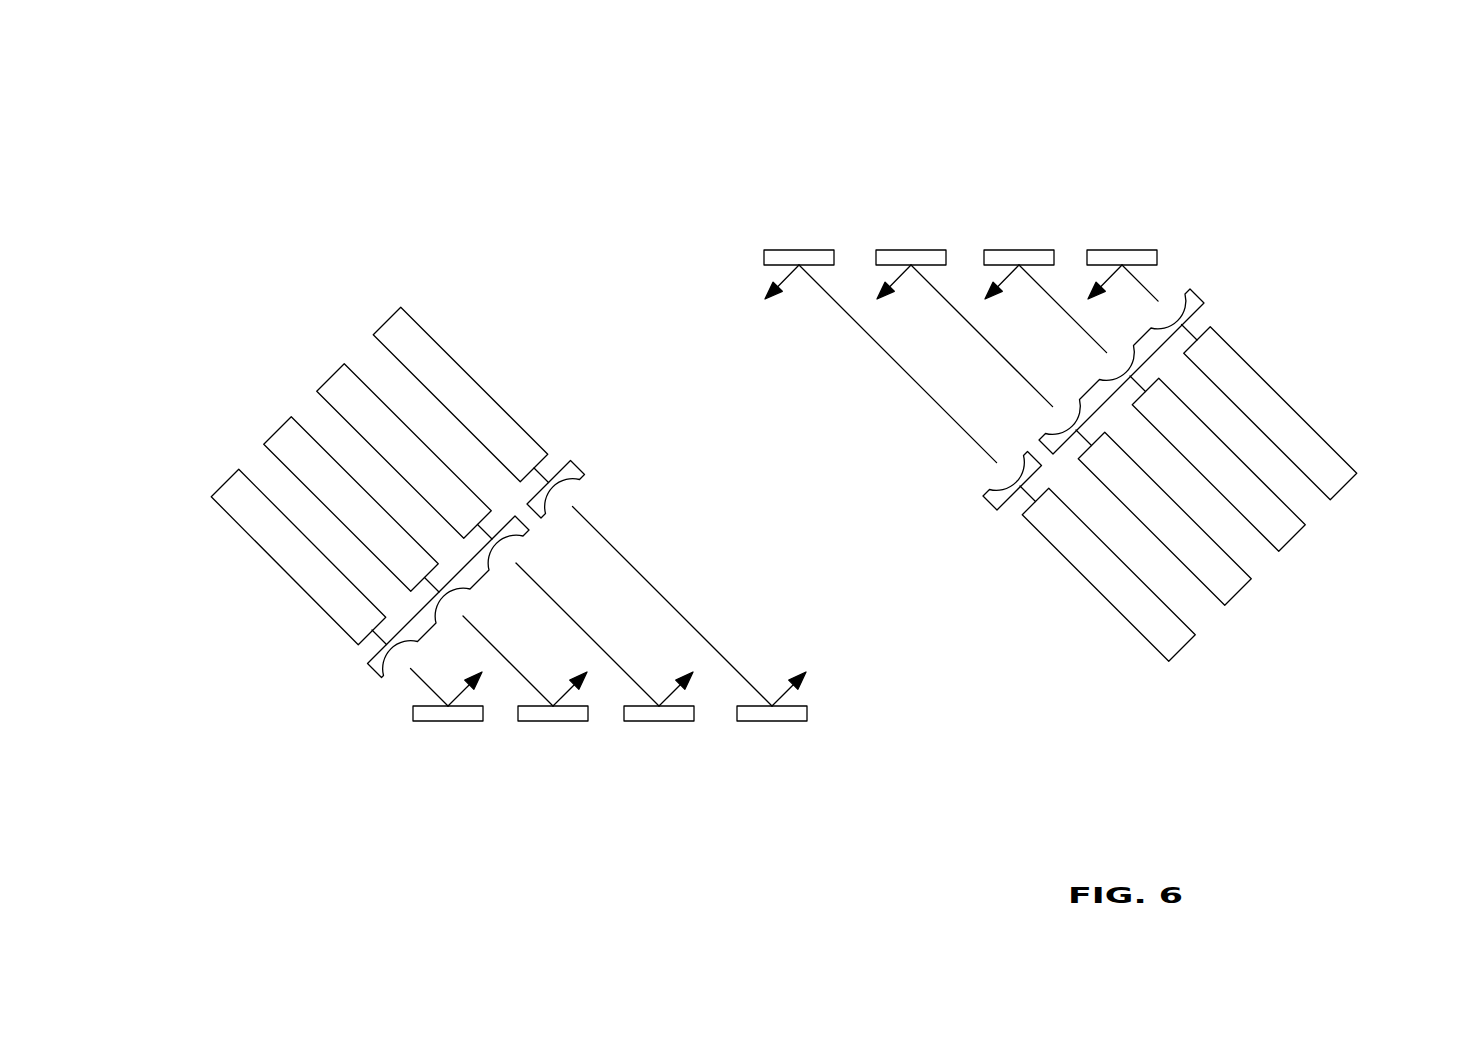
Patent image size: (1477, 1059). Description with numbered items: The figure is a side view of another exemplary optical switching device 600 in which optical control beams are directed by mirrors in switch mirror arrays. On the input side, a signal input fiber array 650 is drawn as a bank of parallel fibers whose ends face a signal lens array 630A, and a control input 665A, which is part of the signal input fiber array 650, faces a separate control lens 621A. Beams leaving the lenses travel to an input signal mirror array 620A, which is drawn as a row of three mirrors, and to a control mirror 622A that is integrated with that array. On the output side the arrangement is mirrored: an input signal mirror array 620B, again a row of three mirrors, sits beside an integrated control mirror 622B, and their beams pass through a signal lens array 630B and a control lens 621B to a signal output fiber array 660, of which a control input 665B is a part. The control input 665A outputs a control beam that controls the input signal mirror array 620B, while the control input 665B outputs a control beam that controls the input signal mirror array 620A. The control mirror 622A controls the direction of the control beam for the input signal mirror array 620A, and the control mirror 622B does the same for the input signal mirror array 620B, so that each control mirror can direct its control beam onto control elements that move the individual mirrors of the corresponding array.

The optical switching device 600 is at (1236, 136).
The input signal mirror array 620A is at (660, 740).
The input signal mirror array 620B is at (1117, 230).
The control lens 621A is at (565, 460).
The control lens 621B is at (986, 491).
The control mirror 622A is at (778, 721).
The control mirror 622B is at (793, 250).
The signal lens array 630A is at (368, 665).
The signal lens array 630B is at (1189, 292).
The signal input fiber array 650 is at (338, 346).
The signal output fiber array 660 is at (1374, 478).
The control input 665A is at (379, 343).
The control input 665B is at (1165, 600).